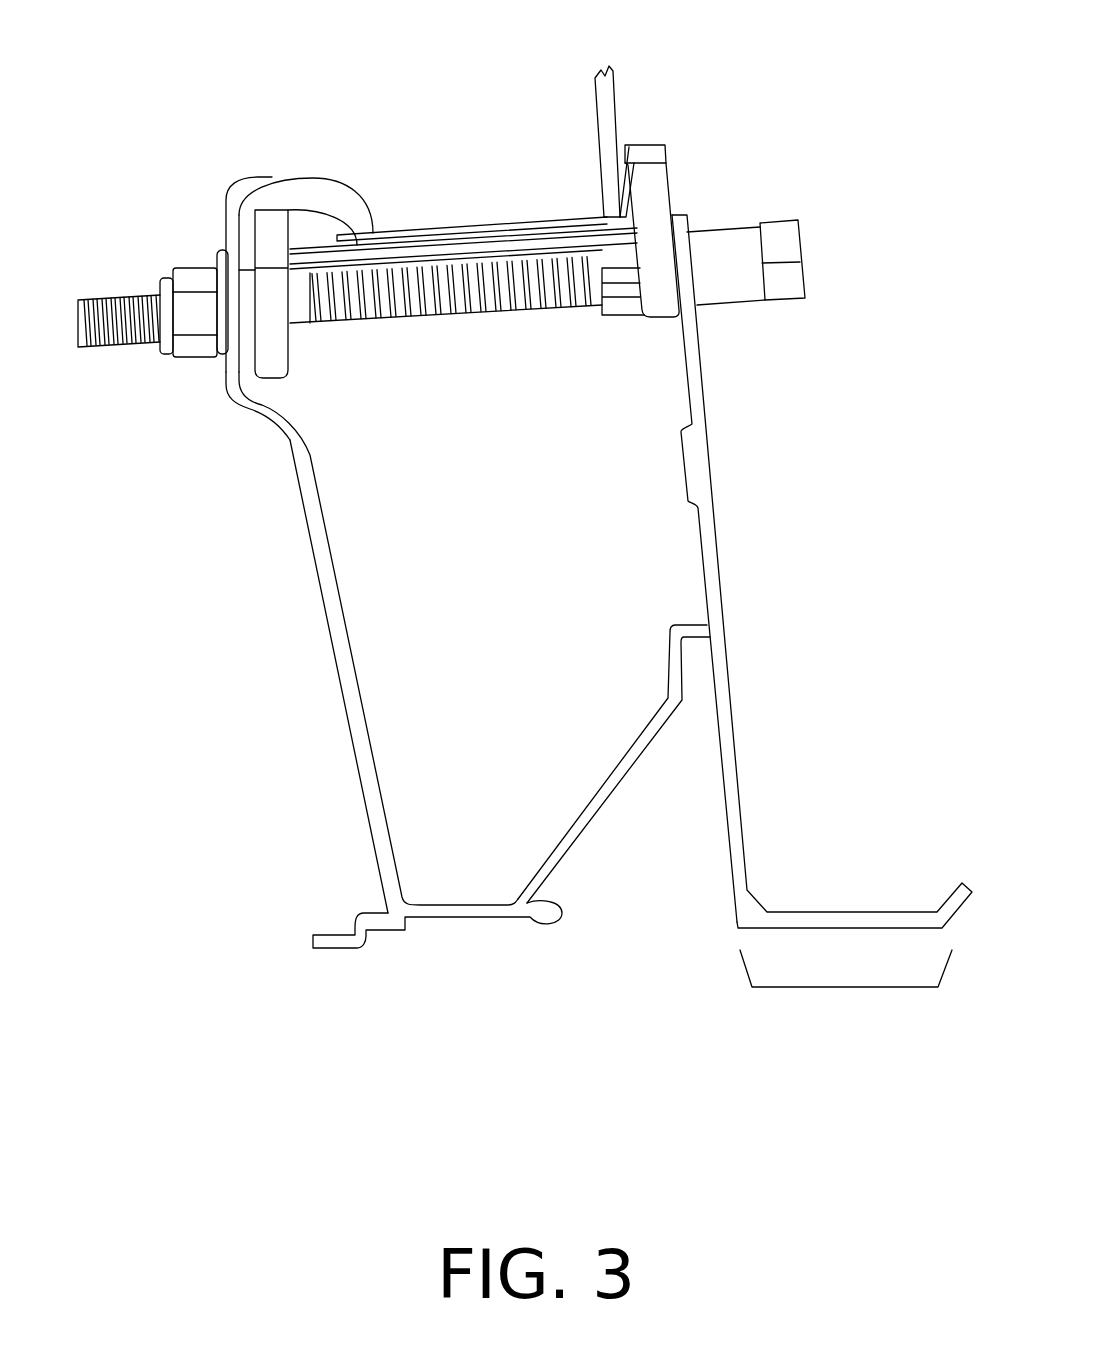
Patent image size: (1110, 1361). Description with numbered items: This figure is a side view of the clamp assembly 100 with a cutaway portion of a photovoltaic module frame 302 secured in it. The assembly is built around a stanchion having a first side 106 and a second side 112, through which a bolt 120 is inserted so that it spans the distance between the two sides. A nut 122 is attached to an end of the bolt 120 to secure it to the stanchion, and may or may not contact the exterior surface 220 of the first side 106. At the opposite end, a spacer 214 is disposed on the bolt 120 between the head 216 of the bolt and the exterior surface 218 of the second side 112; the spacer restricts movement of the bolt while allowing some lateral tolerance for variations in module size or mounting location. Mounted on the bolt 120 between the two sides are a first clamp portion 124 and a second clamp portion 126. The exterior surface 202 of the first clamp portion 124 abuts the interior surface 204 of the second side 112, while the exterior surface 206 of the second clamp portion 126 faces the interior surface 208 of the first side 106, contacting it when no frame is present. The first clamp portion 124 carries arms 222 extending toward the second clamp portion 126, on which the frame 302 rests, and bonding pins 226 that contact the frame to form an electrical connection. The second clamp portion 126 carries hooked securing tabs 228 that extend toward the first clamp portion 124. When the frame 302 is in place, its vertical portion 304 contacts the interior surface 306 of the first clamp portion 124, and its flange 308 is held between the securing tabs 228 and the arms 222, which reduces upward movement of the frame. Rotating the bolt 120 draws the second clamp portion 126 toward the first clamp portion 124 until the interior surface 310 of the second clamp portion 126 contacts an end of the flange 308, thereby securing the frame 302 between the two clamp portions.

The clamp assembly 100 is at (778, 63).
The first side 106 is at (268, 555).
The second side 112 is at (740, 540).
The bolt 120 is at (140, 335).
The nut 122 is at (178, 287).
The first clamp portion 124 is at (643, 145).
The second clamp portion 126 is at (267, 212).
The exterior surface of first clamp portion 202 is at (667, 177).
The interior surface of second side 204 is at (686, 378).
The exterior surface of second clamp portion 206 is at (230, 250).
The interior surface of first side 208 is at (302, 438).
The spacer 214 is at (725, 228).
The head 216 is at (786, 234).
The exterior surface of second side 218 is at (700, 360).
The exterior surface of first side 220 is at (263, 413).
The arms 222 is at (560, 230).
The bonding pins 226 is at (622, 162).
The securing tabs 228 is at (355, 192).
The frame 302 is at (585, 53).
The vertical portion 304 is at (602, 118).
The interior surface of first clamp portion 306 is at (630, 205).
The flange 308 is at (520, 218).
The interior surface of second clamp portion 310 is at (292, 352).